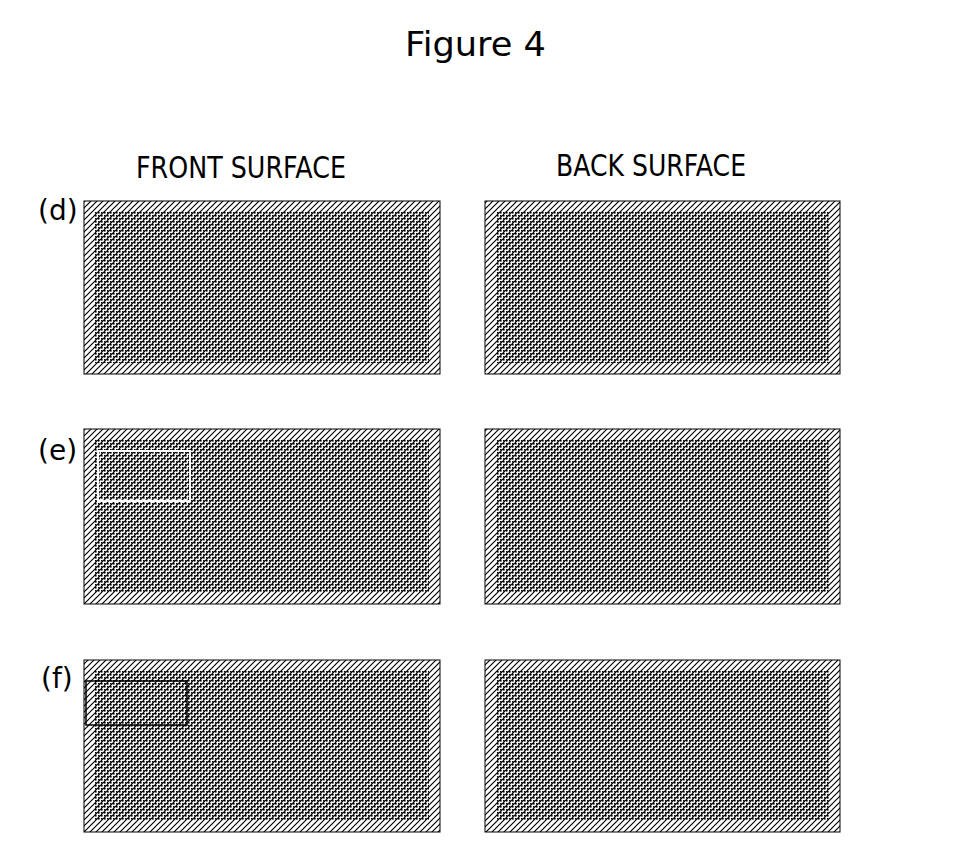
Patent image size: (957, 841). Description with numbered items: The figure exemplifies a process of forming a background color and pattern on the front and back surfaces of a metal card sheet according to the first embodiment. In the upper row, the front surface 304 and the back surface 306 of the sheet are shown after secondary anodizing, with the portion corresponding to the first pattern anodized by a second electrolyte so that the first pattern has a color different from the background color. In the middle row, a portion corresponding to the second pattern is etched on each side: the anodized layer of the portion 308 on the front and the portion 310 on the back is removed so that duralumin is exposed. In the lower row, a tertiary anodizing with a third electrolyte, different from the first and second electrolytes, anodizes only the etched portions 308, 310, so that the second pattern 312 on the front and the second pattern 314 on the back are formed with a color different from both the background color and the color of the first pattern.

The front surface of card substrate 304 is at (353, 193).
The back surface of card substrate 306 is at (788, 192).
The portion corresponding to the second pattern 308 is at (249, 490).
The portion corresponding to the second pattern 310 is at (755, 558).
The second pattern 312 is at (246, 698).
The second pattern 314 is at (770, 780).